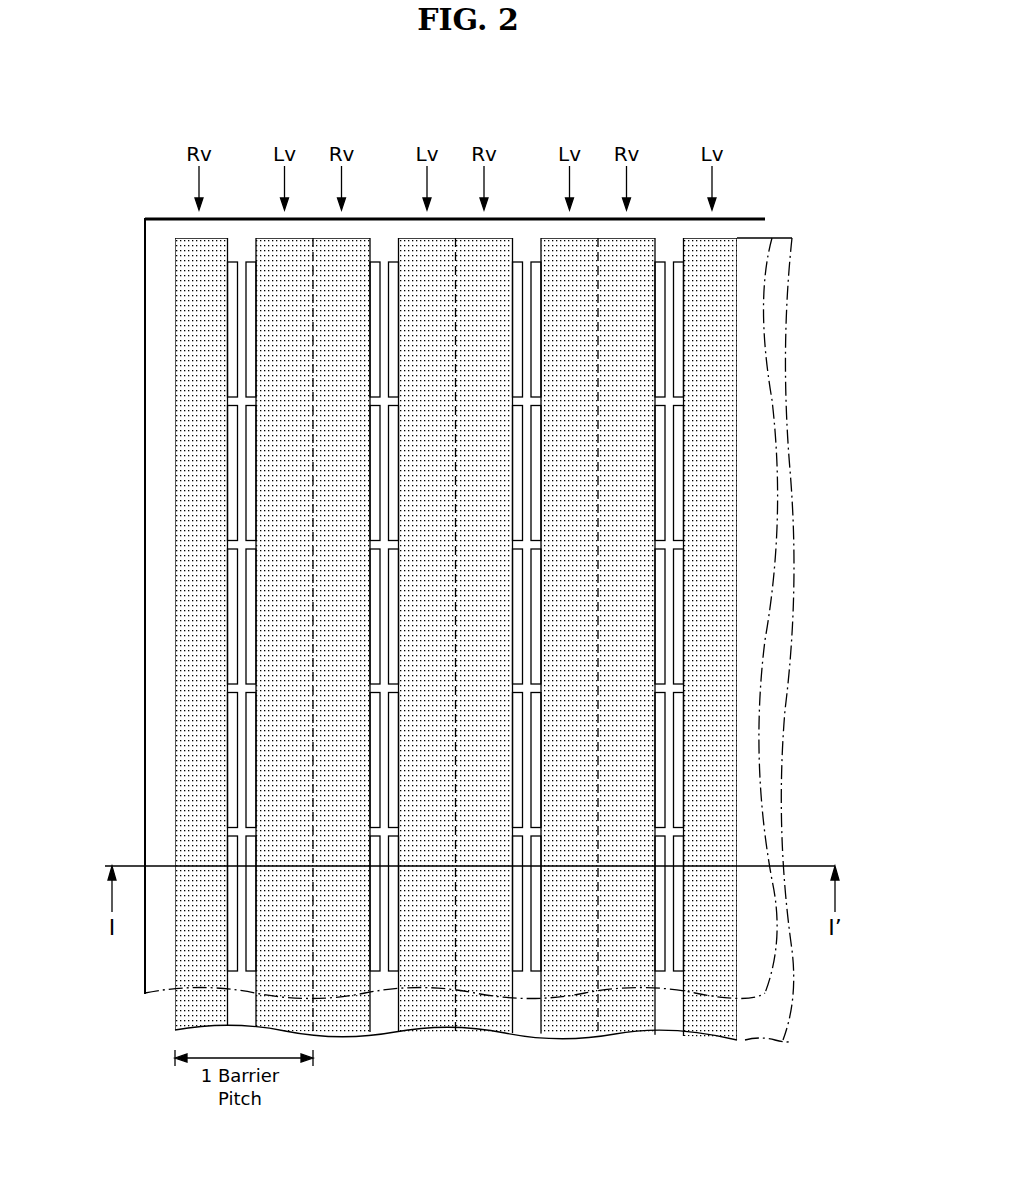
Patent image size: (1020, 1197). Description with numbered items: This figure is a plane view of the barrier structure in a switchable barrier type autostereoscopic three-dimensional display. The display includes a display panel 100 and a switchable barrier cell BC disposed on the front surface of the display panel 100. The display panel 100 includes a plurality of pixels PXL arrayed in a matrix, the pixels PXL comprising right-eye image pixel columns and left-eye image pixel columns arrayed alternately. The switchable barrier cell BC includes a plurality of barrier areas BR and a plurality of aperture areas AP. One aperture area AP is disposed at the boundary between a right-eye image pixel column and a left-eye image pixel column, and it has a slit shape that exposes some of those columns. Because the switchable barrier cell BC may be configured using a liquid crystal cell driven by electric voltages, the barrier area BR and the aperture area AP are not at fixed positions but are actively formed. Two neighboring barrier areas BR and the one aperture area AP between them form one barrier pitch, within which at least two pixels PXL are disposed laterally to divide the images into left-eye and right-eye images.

The display panel 100 is at (145, 372).
The barrier area BR is at (728, 373).
The aperture area AP is at (668, 250).
The pixel PXL is at (678, 314).
The switchable barrier cell BC is at (781, 238).